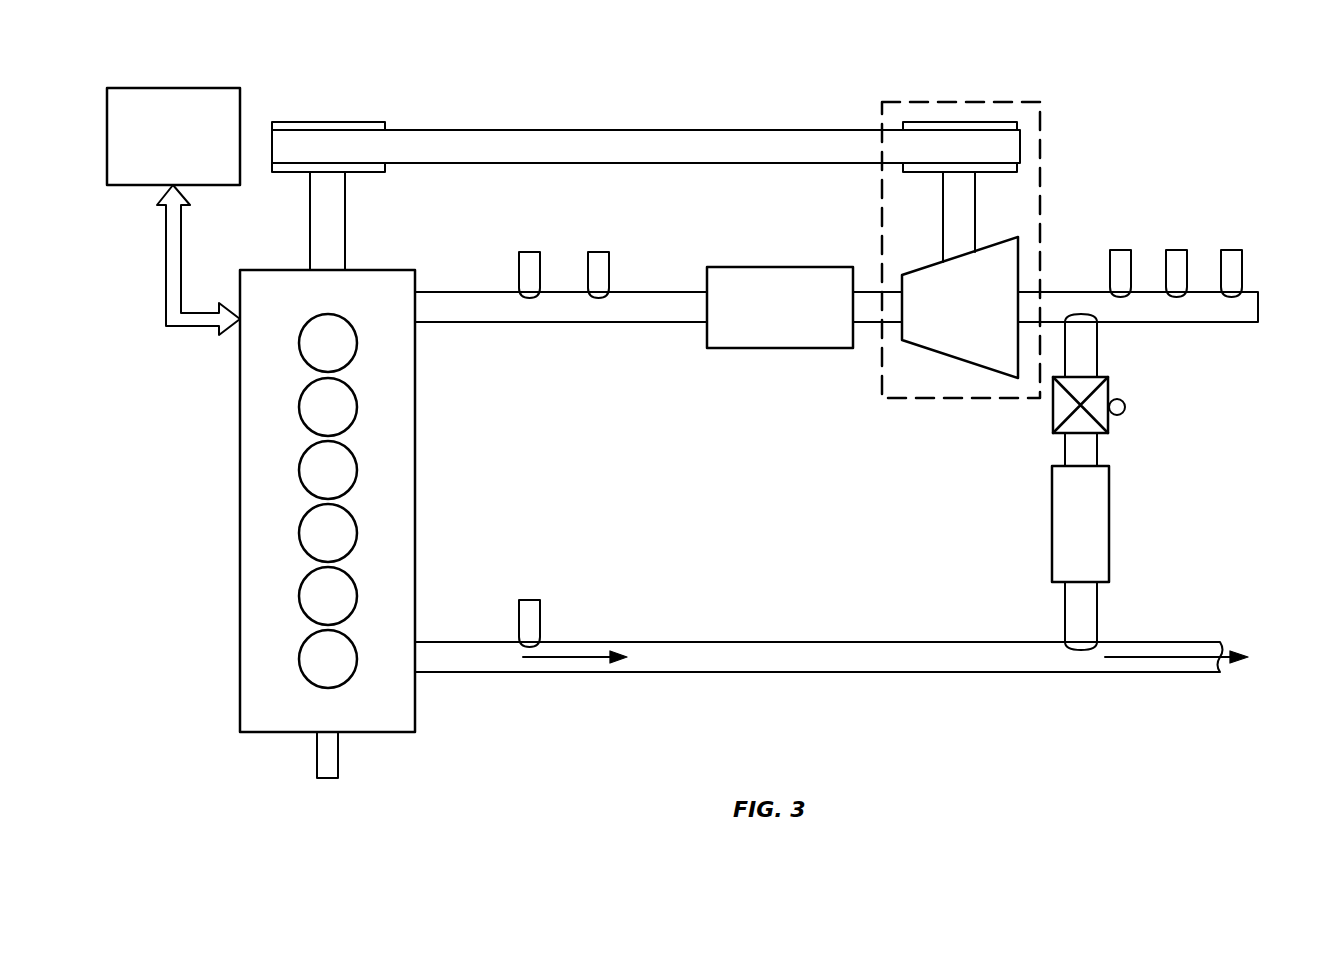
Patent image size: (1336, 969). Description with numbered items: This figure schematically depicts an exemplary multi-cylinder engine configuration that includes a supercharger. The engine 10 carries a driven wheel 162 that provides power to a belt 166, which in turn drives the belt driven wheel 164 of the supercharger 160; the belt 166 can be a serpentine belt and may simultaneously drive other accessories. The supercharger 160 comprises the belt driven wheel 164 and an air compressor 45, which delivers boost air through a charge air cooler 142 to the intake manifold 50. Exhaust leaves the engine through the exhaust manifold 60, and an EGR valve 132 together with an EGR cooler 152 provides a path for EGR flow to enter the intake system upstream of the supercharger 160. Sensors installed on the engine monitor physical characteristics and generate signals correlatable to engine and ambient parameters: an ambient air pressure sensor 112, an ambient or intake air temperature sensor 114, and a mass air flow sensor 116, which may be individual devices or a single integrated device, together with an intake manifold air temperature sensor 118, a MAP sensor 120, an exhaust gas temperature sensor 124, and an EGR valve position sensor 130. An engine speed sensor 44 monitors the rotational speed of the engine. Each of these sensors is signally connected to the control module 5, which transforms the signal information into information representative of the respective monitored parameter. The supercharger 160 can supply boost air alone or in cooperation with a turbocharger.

The control module 5 is at (222, 115).
The engine 10 is at (405, 278).
The engine speed sensor 44 is at (333, 766).
The air compressor 45 is at (995, 268).
The intake manifold 50 is at (461, 313).
The exhaust manifold 60 is at (707, 663).
The ambient air pressure sensor 112 is at (1235, 262).
The ambient or intake air temperature sensor 114 is at (1178, 263).
The mass air flow sensor 116 is at (1121, 258).
The intake manifold air temperature sensor 118 is at (606, 263).
The MAP sensor 120 is at (540, 262).
The exhaust gas temperature sensor 124 is at (528, 607).
The EGR valve position sensor 130 is at (1125, 405).
The EGR valve 132 is at (1062, 408).
The charge air cooler 142 is at (776, 280).
The EGR cooler 152 is at (1098, 518).
The supercharger 160 is at (1022, 100).
The driven wheel 162 is at (330, 122).
The belt driven wheel 164 is at (928, 122).
The belt 166 is at (613, 128).